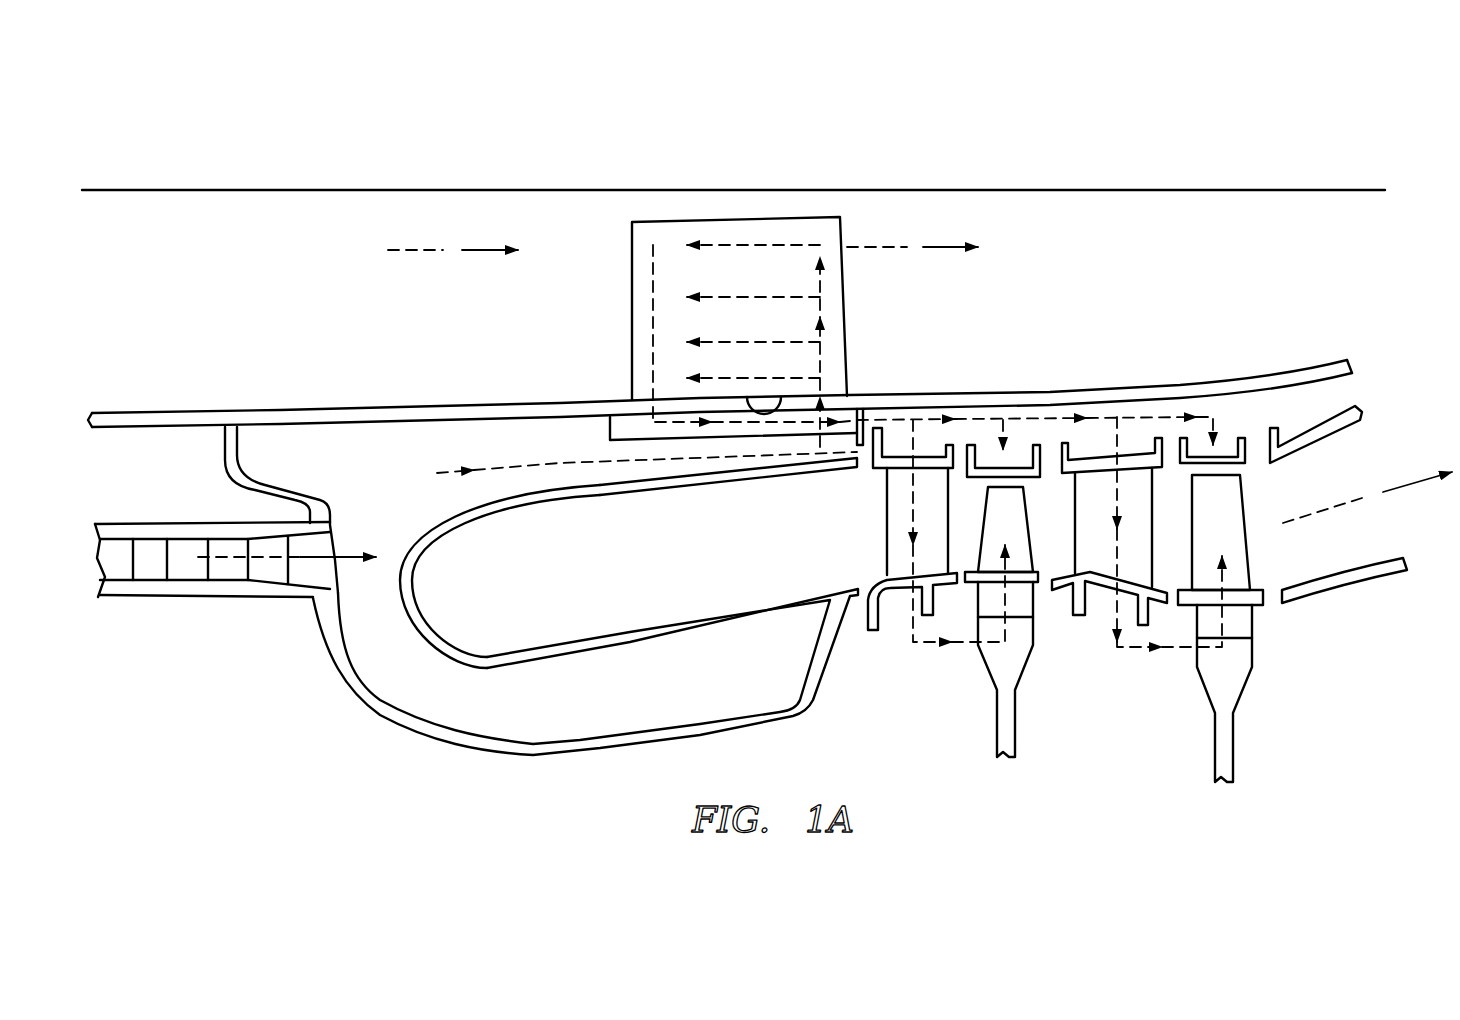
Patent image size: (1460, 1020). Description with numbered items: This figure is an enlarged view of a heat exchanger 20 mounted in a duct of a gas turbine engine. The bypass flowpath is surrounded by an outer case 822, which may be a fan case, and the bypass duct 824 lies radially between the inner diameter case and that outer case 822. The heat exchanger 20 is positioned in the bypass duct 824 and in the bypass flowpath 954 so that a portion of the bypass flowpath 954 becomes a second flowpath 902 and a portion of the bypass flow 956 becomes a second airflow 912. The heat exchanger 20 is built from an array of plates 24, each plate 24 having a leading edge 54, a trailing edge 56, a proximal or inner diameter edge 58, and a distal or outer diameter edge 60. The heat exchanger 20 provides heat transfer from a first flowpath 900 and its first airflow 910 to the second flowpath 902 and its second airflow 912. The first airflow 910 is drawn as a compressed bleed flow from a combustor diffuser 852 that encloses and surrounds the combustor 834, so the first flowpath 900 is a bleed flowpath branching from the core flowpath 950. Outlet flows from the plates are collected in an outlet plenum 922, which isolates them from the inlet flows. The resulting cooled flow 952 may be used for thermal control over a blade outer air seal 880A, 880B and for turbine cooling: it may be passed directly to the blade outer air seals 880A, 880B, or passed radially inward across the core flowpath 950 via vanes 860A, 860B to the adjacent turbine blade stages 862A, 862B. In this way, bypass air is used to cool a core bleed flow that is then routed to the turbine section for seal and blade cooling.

The heat exchanger 20 is at (806, 190).
The plate 24 is at (640, 247).
The leading edge 54 is at (632, 318).
The trailing edge 56 is at (845, 312).
The proximal edge 58 is at (775, 413).
The distal edge 60 is at (730, 218).
The outer case 822 is at (1127, 190).
The bypass duct 824 is at (355, 348).
The combustor 834 is at (521, 630).
The combustor diffuser 852 is at (473, 447).
The vane 860A is at (928, 442).
The vane 860B is at (1138, 445).
The turbine blade stage 862A is at (977, 665).
The turbine blade stage 862B is at (1185, 663).
The blade outer air seal 880A is at (1020, 450).
The blade outer air seal 880B is at (1228, 440).
The first flowpath 900 is at (525, 465).
The second flowpath 902 is at (887, 245).
The first airflow 910 is at (643, 462).
The second airflow 912 is at (952, 247).
The outlet plenum 922 is at (627, 423).
The core flowpath 950 is at (237, 563).
The cooled flow 952 is at (347, 560).
The bypass flowpath 954 is at (428, 240).
The bypass flow 956 is at (490, 247).